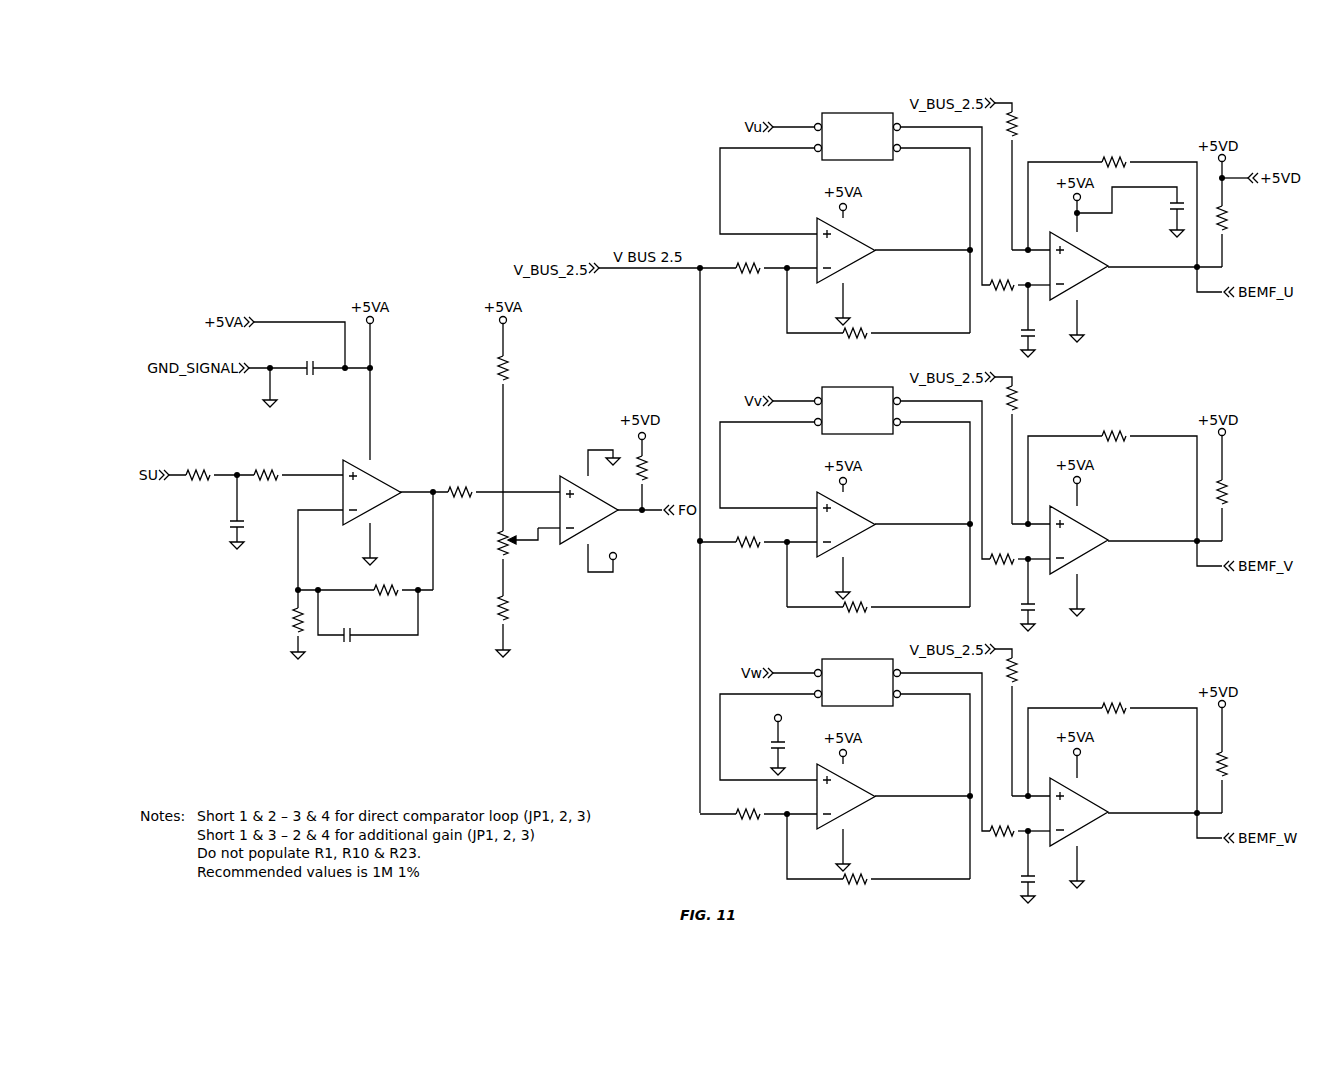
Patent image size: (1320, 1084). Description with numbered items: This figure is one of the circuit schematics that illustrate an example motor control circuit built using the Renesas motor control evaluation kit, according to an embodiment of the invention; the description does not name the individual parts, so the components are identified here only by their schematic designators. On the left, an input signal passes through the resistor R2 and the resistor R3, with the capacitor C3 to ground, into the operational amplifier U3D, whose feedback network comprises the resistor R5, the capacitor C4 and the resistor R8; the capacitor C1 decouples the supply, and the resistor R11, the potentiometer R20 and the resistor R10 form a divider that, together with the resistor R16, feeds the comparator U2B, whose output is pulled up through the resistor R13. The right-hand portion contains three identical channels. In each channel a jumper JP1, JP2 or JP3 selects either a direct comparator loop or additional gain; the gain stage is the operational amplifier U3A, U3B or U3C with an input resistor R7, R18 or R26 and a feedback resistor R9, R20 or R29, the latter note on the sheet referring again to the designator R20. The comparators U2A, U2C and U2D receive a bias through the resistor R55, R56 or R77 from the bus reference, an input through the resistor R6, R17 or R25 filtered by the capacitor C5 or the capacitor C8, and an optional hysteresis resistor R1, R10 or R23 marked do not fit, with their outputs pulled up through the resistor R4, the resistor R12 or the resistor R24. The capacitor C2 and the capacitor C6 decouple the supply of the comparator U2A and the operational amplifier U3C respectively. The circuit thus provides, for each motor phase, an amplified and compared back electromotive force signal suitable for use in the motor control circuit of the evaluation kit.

The hysteresis feedback resistor (DNF) R1 is at (1112, 203).
The input resistor 1K R2 is at (203, 476).
The input resistor 1K R3 is at (290, 476).
The pull-up resistor 10K R4 is at (1237, 214).
The feedback resistor 4.99K R5 is at (365, 590).
The input resistor 10K R6 is at (1020, 285).
The input resistor 100K 1% R7 is at (758, 269).
The gain resistor 1K R8 is at (288, 624).
The feedback resistor 200K 1% R9 is at (878, 312).
The resistor 100E / DNF feedback resistor R10 is at (846, 535).
The resistor 1K R11 is at (518, 408).
The pull-up resistor 10K R12 is at (1237, 488).
The pull-up resistor 10K R13 is at (657, 475).
The resistor 10K R16 is at (504, 494).
The input resistor 10K R17 is at (1020, 559).
The input resistor 100K 1% R18 is at (758, 543).
The potentiometer 10K / feedback resistor 200K 1% R20 is at (719, 561).
The hysteresis feedback resistor (DNF) R23 is at (1112, 749).
The pull-up resistor 10K R24 is at (1237, 760).
The input resistor 10K R25 is at (1020, 831).
The input resistor 100K 1% R26 is at (758, 815).
The feedback resistor 200K 1% R29 is at (878, 858).
The bias resistor 49.9K 1% R55 is at (1047, 180).
The bias resistor 49.9K 1% R56 is at (1047, 454).
The bias resistor 49.9K 1% R77 is at (1047, 726).
The decoupling capacitor 0.1uF C1 is at (309, 370).
The decoupling capacitor 0.1uF C2 is at (1130, 212).
The filter capacitor 0.1uF C3 is at (258, 512).
The feedback capacitor 100pF C4 is at (368, 625).
The filter capacitor 22pF C5 is at (1010, 594).
The decoupling capacitor 0.1uF C6 is at (762, 736).
The filter capacitor 22pF C8 is at (1010, 595).
The operational amplifier MC33204DR2G U3A is at (883, 258).
The operational amplifier MC33204DR2G U3B is at (883, 532).
The operational amplifier MC33204DR2G U3C is at (879, 804).
The operational amplifier MC33204DR2G U3D is at (403, 499).
The comparator LM339DR2G U2A is at (1108, 283).
The comparator LM339DR2G U2B is at (574, 491).
The comparator LM339DR2G U2C is at (1108, 557).
The comparator LM339DR2G U2D is at (1103, 829).
The gain bypass jumper JP1 is at (850, 138).
The gain bypass jumper JP2 is at (850, 412).
The gain bypass jumper JP3 is at (850, 684).